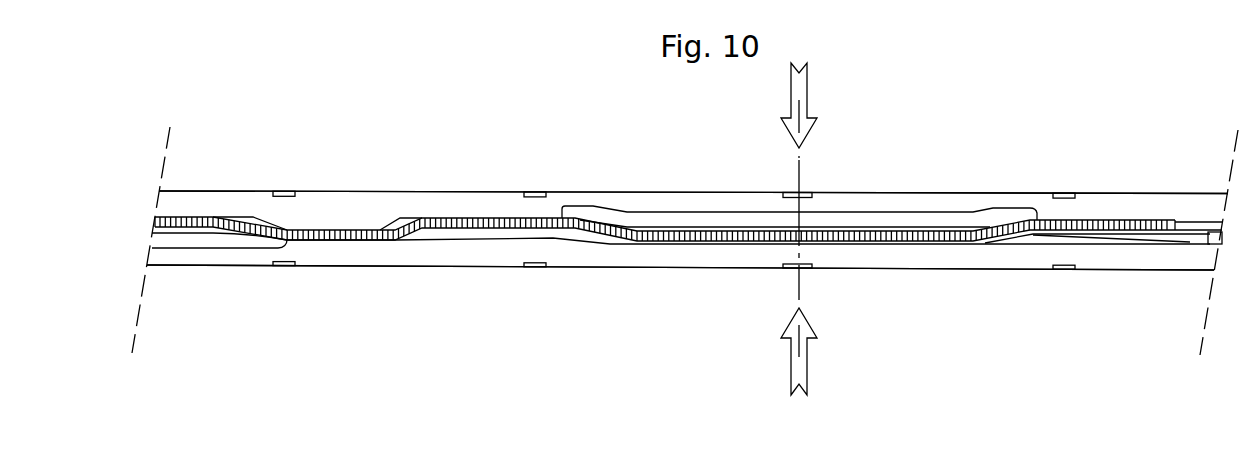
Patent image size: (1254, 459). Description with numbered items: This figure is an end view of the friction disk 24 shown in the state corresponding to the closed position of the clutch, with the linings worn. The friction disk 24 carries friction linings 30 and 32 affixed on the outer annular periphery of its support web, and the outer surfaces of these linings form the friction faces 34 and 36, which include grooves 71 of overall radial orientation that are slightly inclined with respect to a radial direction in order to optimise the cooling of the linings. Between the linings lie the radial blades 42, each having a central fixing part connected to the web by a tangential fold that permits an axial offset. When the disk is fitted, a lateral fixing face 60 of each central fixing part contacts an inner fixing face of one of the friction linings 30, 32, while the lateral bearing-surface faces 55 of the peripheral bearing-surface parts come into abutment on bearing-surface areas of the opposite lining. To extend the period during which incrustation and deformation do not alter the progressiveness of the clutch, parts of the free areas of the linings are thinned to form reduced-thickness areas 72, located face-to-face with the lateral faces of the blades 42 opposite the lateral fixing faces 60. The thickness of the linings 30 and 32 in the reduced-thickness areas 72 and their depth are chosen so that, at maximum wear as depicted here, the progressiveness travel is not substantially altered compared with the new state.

The friction disk 24 is at (127, 225).
The friction lining 30 is at (373, 199).
The friction lining 32 is at (323, 257).
The friction face 34 is at (637, 192).
The friction face 36 is at (594, 267).
The radial blade 42 is at (852, 237).
The lateral bearing-surface face 55 is at (1092, 221).
The lateral fixing face 60 is at (682, 243).
The groove 71 is at (535, 190).
The reduced-thickness area 72 is at (718, 222).